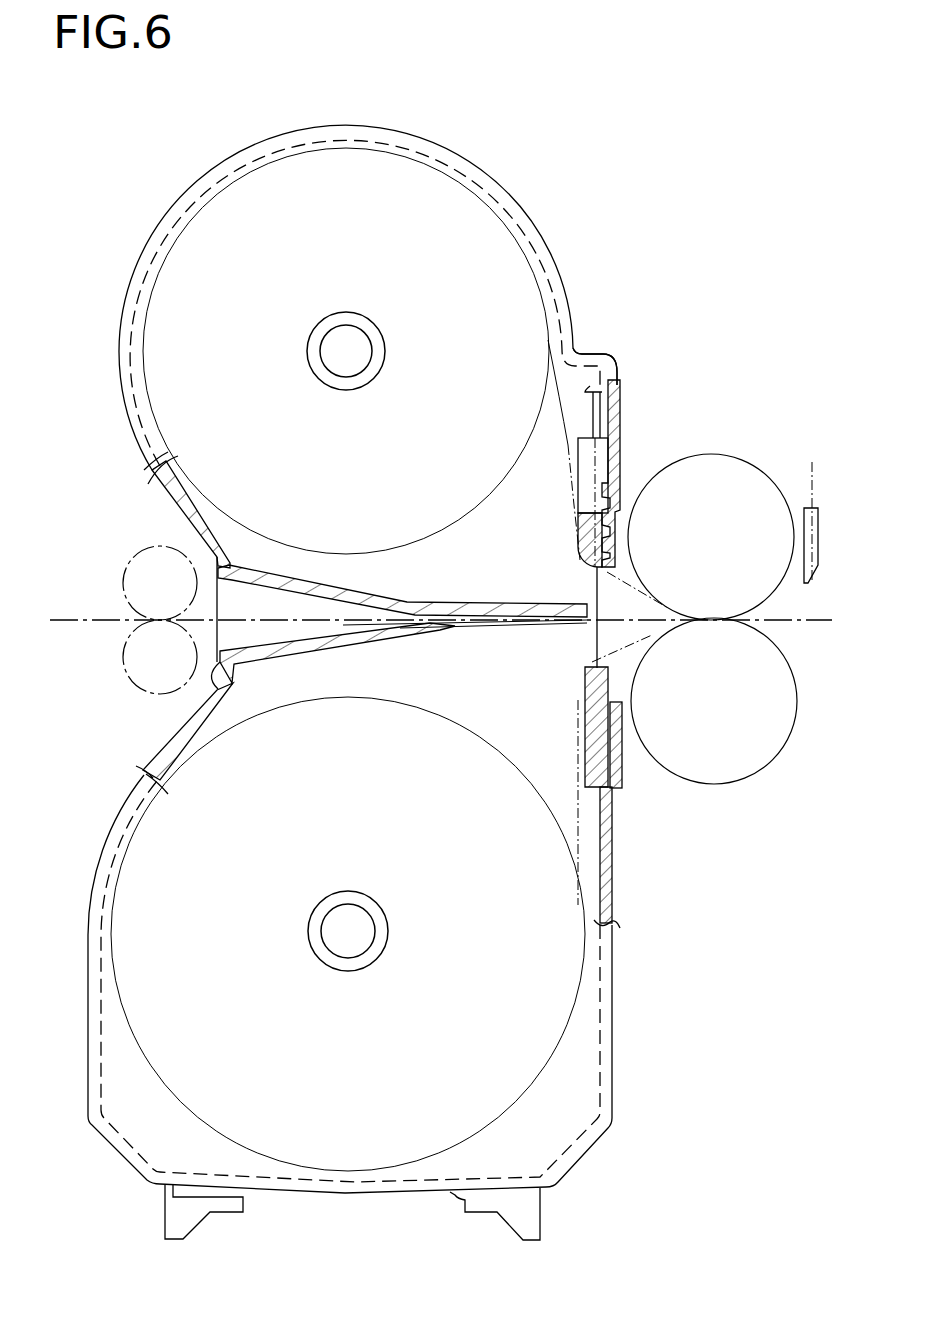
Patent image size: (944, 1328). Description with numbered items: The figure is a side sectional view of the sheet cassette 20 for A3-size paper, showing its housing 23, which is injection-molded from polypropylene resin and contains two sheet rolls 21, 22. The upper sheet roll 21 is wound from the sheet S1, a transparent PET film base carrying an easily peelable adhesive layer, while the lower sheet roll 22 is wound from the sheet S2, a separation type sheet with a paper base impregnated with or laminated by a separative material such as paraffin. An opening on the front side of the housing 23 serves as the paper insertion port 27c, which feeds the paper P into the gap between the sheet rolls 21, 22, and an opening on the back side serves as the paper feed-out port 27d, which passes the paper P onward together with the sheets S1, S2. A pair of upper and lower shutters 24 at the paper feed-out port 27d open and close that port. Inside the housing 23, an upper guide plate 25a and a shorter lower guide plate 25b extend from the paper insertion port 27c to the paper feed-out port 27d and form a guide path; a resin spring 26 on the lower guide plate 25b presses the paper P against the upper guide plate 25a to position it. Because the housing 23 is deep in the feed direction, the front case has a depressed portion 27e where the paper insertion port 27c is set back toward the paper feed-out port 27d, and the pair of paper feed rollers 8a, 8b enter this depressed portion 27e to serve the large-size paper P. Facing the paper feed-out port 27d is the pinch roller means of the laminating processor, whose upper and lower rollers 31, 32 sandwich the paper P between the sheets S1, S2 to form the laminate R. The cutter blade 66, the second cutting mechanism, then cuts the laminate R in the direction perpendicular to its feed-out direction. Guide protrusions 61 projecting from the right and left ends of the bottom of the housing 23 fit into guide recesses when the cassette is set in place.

The sheet cassette 20 is at (514, 174).
The sheet roll 21 is at (195, 262).
The sheet roll 22 is at (150, 907).
The housing 23 is at (555, 262).
The shutters 24 is at (619, 510).
The upper guide plate 25a is at (363, 593).
The lower guide plate 25b is at (310, 650).
The resin spring 26 is at (473, 628).
The paper insertion port 27c is at (214, 577).
The paper feed-out port 27d is at (590, 638).
The depressed portion 27e is at (211, 684).
The paper feed roller 8a is at (147, 588).
The paper feed roller 8b is at (160, 667).
The upper roller 31 is at (712, 487).
The lower roller 32 is at (760, 735).
The guide protrusions 61 is at (165, 1218).
The cutter blade 66 is at (802, 505).
The sheet S1 is at (568, 468).
The sheet S2 is at (580, 775).
The paper P is at (72, 627).
The laminate R is at (806, 624).